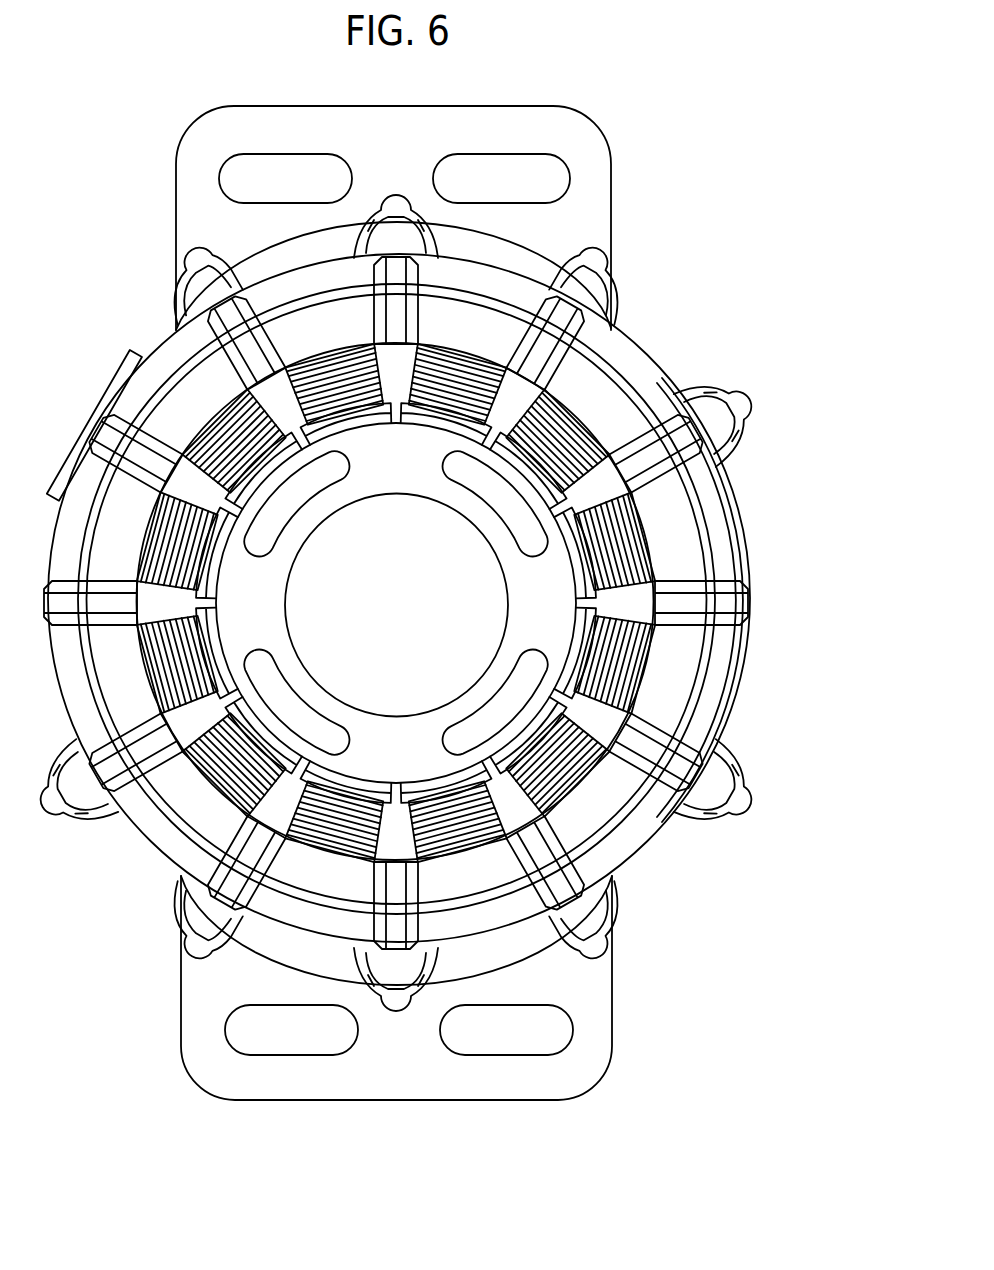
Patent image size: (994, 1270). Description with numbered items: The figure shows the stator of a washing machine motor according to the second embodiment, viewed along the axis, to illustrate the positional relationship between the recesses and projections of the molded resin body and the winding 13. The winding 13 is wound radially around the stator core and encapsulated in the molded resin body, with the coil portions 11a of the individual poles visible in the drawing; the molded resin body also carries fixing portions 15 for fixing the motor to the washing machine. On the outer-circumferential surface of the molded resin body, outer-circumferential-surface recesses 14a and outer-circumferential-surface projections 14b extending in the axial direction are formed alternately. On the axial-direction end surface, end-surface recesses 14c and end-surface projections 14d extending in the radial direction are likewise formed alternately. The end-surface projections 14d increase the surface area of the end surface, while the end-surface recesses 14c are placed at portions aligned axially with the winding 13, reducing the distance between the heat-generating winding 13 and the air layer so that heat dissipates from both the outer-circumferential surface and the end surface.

The coil 11a is at (643, 655).
The winding 13 is at (613, 672).
The outer-circumferential-surface recess 14a is at (667, 830).
The outer-circumferential-surface projection 14b is at (750, 813).
The end-surface recess 14c is at (605, 798).
The end-surface projection 14d is at (642, 745).
The fixing portion 15 is at (579, 224).